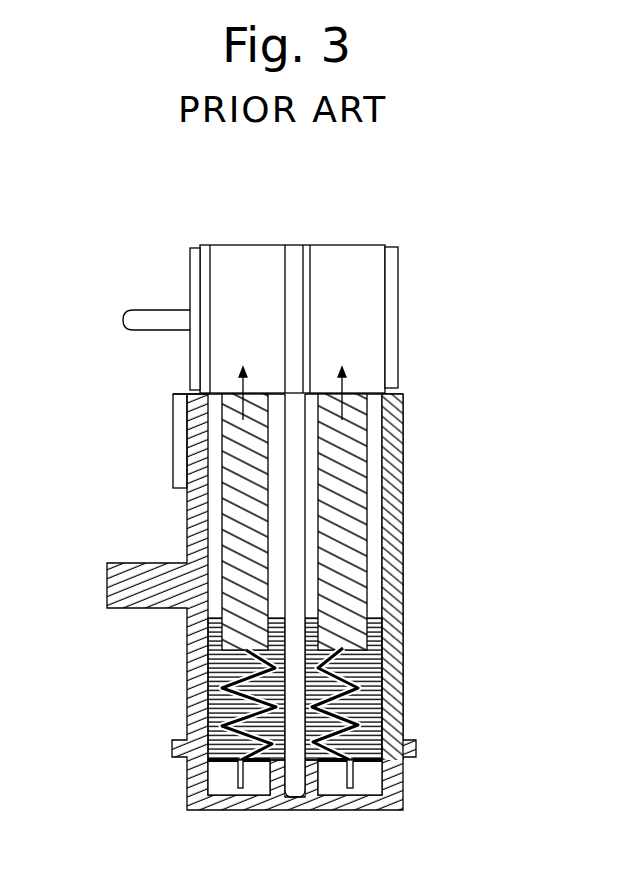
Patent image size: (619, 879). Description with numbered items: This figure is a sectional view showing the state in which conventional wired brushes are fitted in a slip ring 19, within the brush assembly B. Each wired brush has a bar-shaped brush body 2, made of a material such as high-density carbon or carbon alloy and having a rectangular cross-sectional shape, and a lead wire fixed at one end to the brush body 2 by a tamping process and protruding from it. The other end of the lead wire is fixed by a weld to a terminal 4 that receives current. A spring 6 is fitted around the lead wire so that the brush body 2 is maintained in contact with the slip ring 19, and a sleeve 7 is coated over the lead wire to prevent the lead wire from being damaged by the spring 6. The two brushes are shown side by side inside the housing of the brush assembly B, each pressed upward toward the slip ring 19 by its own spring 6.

The slip ring 19 is at (360, 327).
The brush body 2 is at (232, 517).
The spring 6 is at (382, 656).
The sleeve 7 is at (383, 718).
The terminal 4 is at (365, 762).
The brush assembly B is at (541, 333).